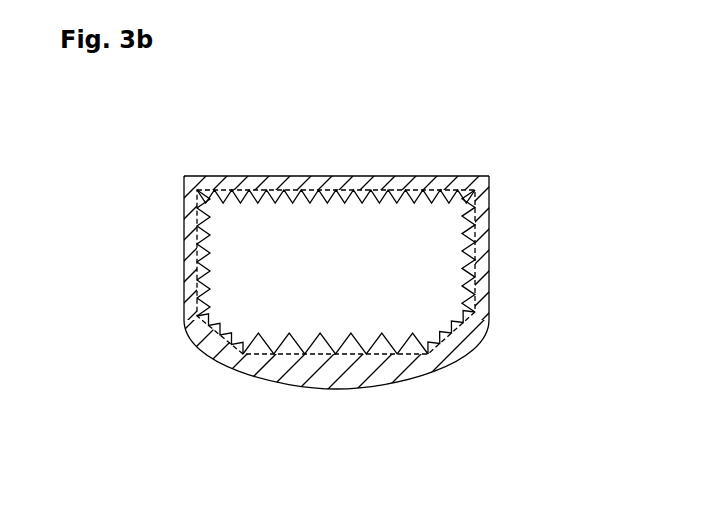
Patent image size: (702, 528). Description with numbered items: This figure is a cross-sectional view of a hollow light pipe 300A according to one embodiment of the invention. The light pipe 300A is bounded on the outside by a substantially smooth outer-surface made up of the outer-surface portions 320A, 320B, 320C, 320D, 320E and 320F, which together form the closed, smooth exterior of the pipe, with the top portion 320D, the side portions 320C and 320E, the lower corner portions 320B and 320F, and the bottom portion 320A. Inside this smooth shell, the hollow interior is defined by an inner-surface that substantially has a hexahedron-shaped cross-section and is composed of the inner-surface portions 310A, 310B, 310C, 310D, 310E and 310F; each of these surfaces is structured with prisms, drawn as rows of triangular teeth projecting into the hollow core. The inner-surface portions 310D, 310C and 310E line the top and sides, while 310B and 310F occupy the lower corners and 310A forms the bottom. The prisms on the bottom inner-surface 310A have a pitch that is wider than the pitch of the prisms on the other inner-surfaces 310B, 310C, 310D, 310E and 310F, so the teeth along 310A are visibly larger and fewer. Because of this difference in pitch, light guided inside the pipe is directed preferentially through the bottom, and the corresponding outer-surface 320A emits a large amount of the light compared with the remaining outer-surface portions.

The light pipe 300A is at (295, 116).
The inner-surface 310A is at (373, 362).
The inner-surface 310B is at (208, 320).
The inner-surface 310C is at (202, 226).
The inner-surface 310D is at (322, 190).
The inner-surface 310E is at (468, 222).
The inner-surface 310F is at (462, 332).
The outer-surface 320A is at (314, 390).
The outer-surface 320B is at (213, 363).
The outer-surface 320C is at (187, 263).
The outer-surface 320D is at (405, 177).
The outer-surface 320E is at (488, 262).
The outer-surface 320F is at (467, 352).